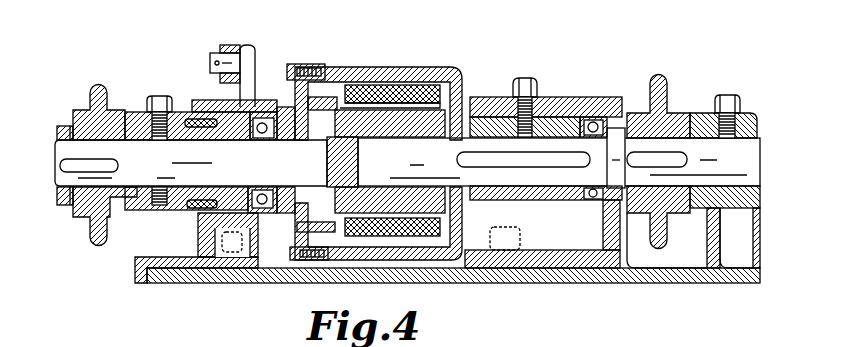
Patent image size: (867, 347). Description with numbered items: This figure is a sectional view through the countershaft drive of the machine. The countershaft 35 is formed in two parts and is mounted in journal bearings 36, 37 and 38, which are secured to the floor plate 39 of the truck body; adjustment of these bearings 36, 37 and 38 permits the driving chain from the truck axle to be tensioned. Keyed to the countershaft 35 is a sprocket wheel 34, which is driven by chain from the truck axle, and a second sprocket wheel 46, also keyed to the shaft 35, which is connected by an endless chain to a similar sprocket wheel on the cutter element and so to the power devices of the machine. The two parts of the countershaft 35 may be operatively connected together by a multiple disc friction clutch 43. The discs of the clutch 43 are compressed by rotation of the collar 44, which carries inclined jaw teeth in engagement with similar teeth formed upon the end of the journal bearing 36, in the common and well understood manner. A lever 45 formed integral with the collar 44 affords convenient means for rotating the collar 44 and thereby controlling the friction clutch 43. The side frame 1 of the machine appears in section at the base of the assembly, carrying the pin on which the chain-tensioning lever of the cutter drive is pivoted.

The side frame 1 is at (458, 283).
The sprocket wheel 34 is at (657, 78).
The countershaft 35 is at (497, 145).
The journal bearing 36 is at (180, 112).
The journal bearing 37 is at (572, 108).
The journal bearing 38 is at (747, 113).
The floor plate 39 is at (277, 284).
The multiple disc friction clutch 43 is at (378, 88).
The collar 44 is at (263, 110).
The lever 45 is at (243, 47).
The sprocket wheel 46 is at (100, 100).